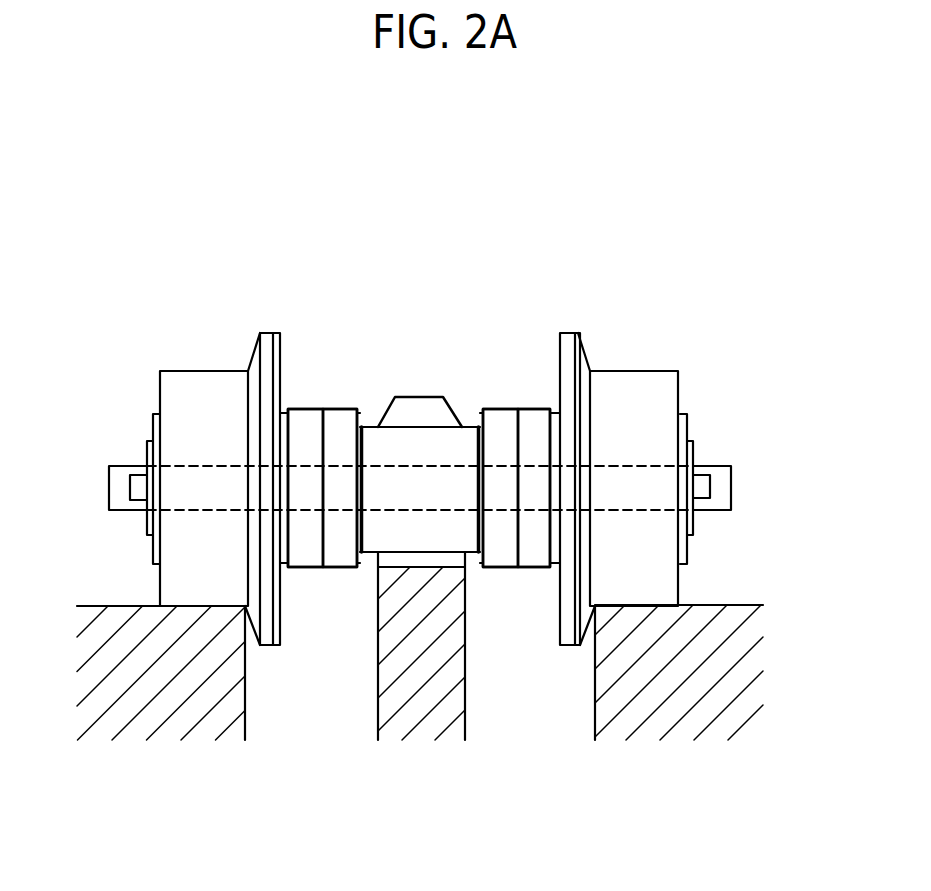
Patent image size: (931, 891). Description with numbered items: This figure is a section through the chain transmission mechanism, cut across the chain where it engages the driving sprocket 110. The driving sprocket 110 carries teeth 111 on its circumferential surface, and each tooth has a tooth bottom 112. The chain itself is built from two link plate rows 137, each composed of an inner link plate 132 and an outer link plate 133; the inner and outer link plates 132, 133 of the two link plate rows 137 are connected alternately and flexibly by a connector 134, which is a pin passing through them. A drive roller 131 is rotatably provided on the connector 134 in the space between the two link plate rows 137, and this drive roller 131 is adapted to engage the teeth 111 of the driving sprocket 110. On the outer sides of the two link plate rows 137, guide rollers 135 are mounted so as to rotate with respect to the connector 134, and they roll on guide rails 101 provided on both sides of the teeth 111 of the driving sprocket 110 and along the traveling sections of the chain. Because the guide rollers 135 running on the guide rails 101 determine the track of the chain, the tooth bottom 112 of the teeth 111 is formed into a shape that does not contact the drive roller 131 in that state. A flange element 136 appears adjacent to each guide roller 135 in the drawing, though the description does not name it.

The guide rail 101 is at (128, 612).
The driving sprocket 110 is at (382, 616).
The teeth 111 is at (407, 400).
The tooth bottom 112 is at (431, 566).
The drive roller 131 is at (470, 437).
The inner link plate 132 is at (338, 408).
The outer link plate 133 is at (303, 408).
The connector 134 is at (718, 475).
The guide roller 135 is at (222, 380).
The flange 136 is at (277, 332).
The link plate row 137 is at (433, 225).